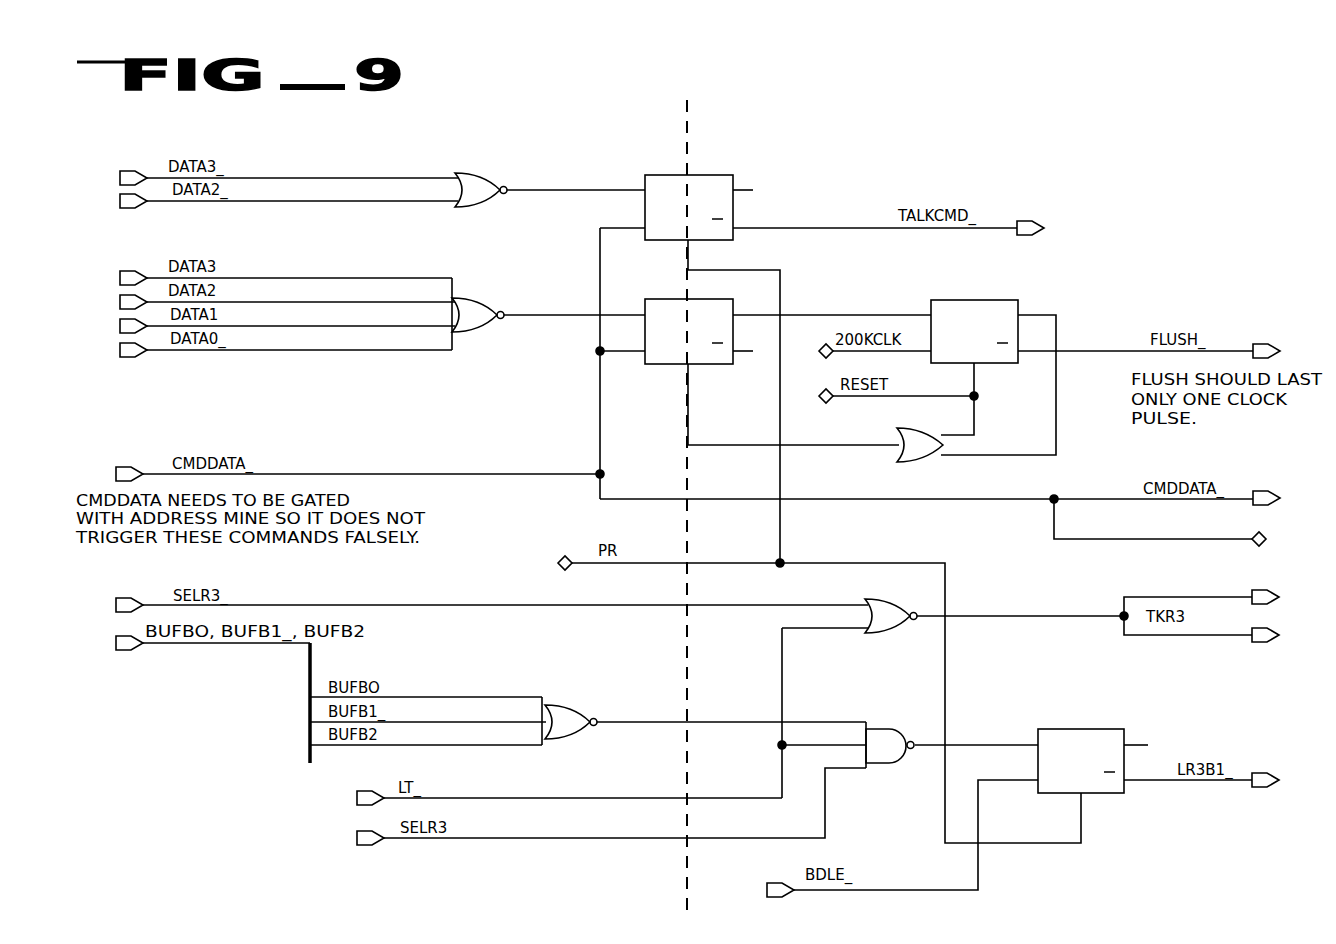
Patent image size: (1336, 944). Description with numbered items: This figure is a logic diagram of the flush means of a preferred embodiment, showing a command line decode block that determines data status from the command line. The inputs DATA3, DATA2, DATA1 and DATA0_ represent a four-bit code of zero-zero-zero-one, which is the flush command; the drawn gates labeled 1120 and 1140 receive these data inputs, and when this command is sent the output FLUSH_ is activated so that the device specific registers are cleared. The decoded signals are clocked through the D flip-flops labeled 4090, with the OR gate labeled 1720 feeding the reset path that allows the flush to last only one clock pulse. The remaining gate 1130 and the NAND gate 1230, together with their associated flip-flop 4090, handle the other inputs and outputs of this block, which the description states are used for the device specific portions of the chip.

The NOR gate 1120 is at (687, 413).
The NOR gate 1140 is at (488, 324).
The NOR gate 1130 is at (580, 730).
The NAND gate 1230 is at (897, 758).
The OR gate 1720 is at (904, 437).
The D flip-flop 4090 is at (884, 484).